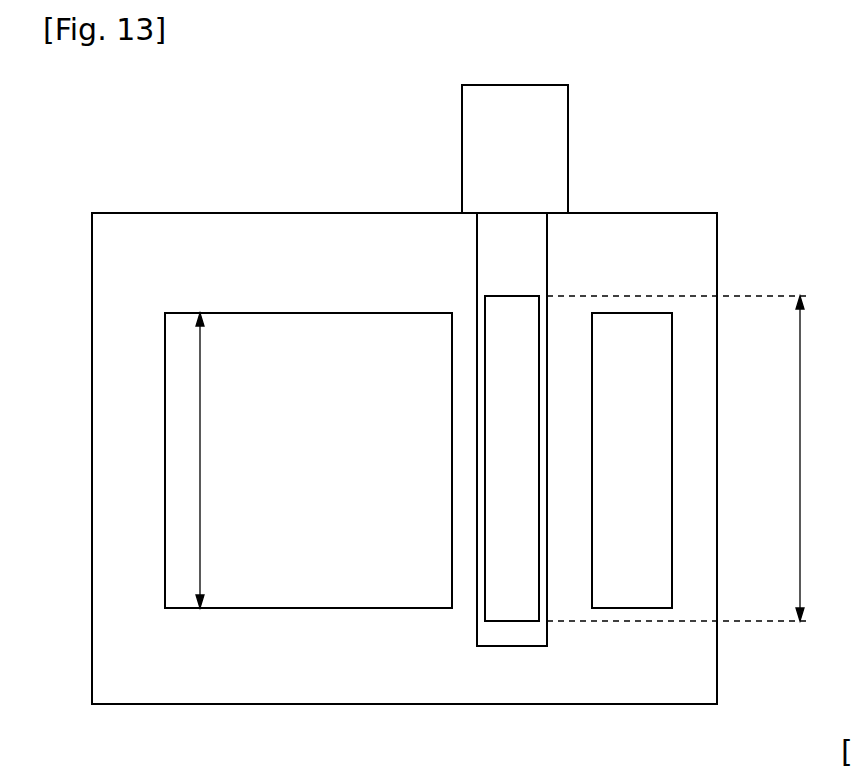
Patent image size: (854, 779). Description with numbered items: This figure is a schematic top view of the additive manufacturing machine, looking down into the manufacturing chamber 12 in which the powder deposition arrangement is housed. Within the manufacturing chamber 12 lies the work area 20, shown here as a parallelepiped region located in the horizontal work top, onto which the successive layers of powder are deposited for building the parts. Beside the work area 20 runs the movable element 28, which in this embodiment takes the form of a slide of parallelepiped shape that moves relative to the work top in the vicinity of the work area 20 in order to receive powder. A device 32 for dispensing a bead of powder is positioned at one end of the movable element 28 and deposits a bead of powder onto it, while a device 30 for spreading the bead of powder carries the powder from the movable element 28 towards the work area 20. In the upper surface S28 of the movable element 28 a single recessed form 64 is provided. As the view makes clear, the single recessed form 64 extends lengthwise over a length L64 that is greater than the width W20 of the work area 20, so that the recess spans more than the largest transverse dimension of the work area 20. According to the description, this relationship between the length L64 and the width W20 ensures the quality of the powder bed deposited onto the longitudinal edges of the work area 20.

The manufacturing chamber 12 is at (717, 278).
The device for dispensing a bead of powder 32 is at (555, 139).
The movable element 28 is at (547, 267).
The upper surface of the movable element S28 is at (493, 262).
The single recessed form 64 is at (513, 579).
The work area 20 is at (368, 483).
The device for spreading the bead of powder 30 is at (657, 450).
The width of the work area W20 is at (230, 460).
The length of the single recessed form L64 is at (699, 458).